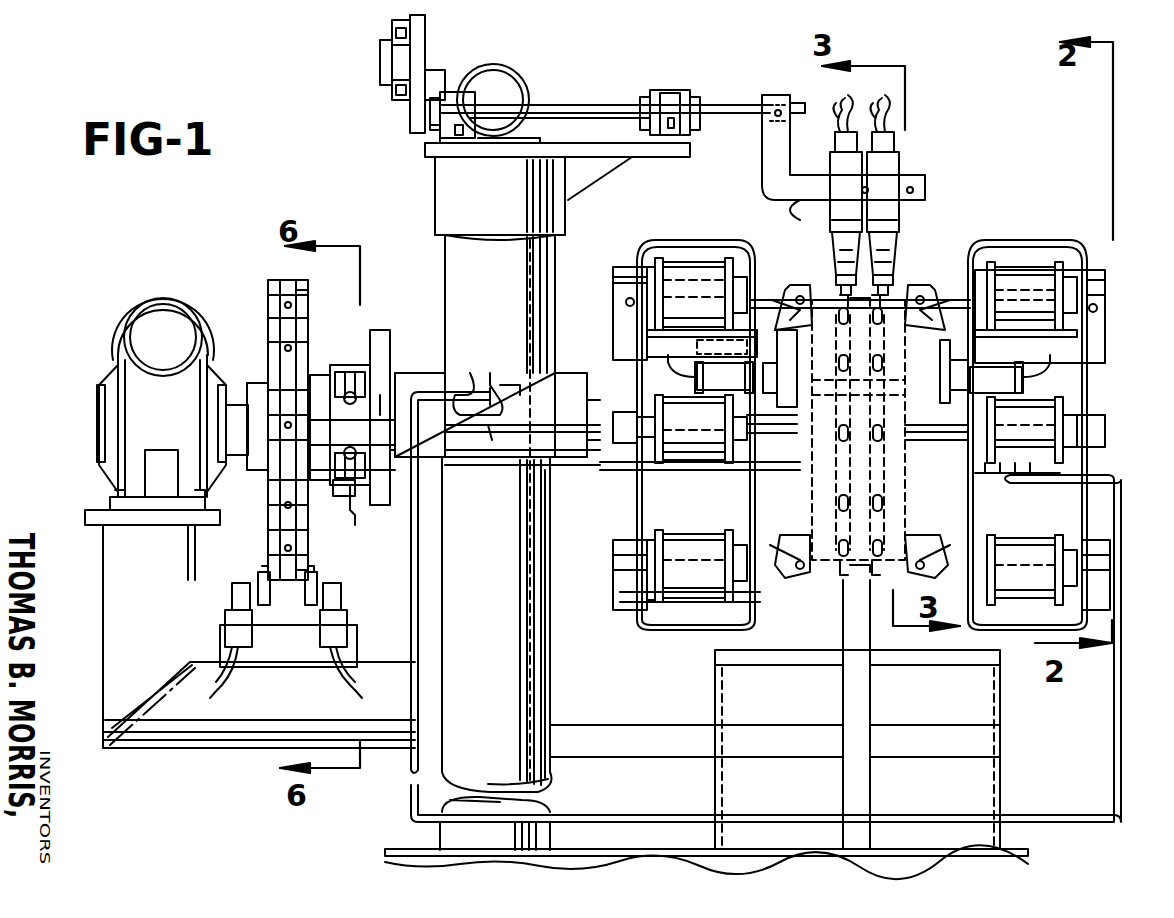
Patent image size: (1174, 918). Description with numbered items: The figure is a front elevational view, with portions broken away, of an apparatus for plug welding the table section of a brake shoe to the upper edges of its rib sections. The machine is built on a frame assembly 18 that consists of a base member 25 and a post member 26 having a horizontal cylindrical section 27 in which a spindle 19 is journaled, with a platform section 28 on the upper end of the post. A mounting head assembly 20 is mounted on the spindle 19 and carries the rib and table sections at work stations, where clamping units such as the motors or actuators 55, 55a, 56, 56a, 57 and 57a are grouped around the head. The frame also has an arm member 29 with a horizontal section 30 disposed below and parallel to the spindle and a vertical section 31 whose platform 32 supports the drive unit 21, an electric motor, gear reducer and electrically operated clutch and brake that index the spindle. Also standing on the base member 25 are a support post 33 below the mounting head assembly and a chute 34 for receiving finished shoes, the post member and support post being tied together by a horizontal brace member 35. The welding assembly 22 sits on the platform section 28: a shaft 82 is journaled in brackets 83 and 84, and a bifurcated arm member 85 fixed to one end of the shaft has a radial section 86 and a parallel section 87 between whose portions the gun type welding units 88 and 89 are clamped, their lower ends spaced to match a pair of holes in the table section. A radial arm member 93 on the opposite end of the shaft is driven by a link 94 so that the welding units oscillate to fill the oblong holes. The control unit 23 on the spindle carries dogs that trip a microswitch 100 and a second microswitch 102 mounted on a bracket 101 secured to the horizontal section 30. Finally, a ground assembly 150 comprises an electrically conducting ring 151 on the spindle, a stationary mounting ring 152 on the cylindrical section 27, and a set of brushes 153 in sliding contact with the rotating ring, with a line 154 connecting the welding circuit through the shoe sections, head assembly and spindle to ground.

The frame assembly 18 is at (556, 642).
The spindle 19 is at (608, 390).
The mounting head assembly 20 is at (870, 429).
The drive unit 21 is at (93, 386).
The welding assembly 22 is at (550, 73).
The control unit 23 is at (262, 540).
The base member 25 is at (660, 848).
The post member 26 is at (553, 545).
The horizontal cylindrical section 27 is at (420, 382).
The platform section 28 is at (425, 149).
The arm member 29 is at (100, 664).
The horizontal section 30 is at (205, 748).
The vertical section 31 is at (103, 590).
The platform 32 is at (90, 519).
The support post 33 is at (872, 708).
The chute 34 is at (1002, 730).
The horizontal brace member 35 is at (668, 728).
The motor 55 is at (1060, 300).
The motor 55a is at (660, 268).
The motor 56 is at (1060, 408).
The motor 56a is at (680, 470).
The motor 57 is at (1085, 562).
The motor 57a is at (695, 612).
The shaft 82 is at (600, 115).
The bracket 83 is at (470, 78).
The bracket 84 is at (668, 92).
The bifurcated arm member 85 is at (858, 165).
The section 86 is at (762, 161).
The section 87 is at (807, 217).
The gun type welding unit 88 is at (833, 250).
The gun type welding unit 89 is at (897, 248).
The radial arm member 93 is at (436, 58).
The link 94 is at (392, 67).
The microswitch 100 is at (225, 615).
The bracket 101 is at (355, 637).
The second microswitch 102 is at (342, 608).
The ground assembly 150 is at (375, 305).
The electrically conducting ring 151 is at (337, 436).
The stationary mounting ring 152 is at (380, 505).
The set of brushes 153 is at (350, 496).
The line 154 is at (352, 525).